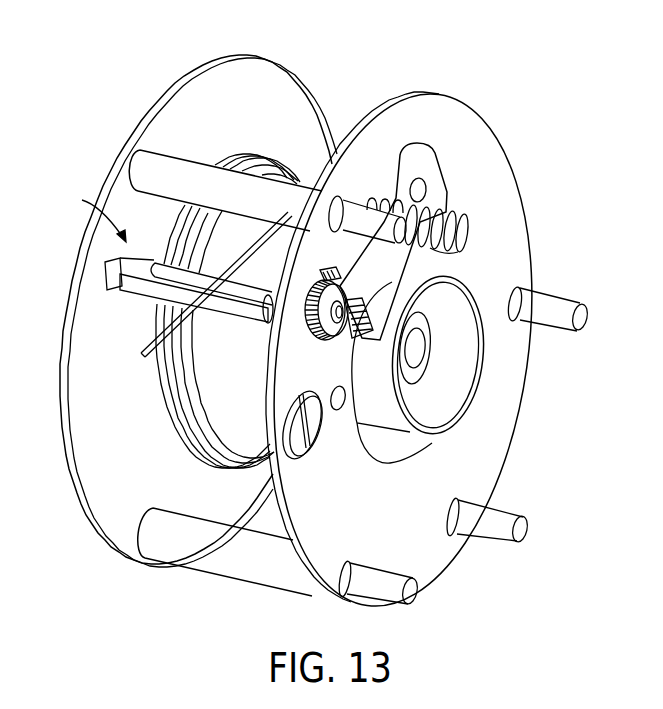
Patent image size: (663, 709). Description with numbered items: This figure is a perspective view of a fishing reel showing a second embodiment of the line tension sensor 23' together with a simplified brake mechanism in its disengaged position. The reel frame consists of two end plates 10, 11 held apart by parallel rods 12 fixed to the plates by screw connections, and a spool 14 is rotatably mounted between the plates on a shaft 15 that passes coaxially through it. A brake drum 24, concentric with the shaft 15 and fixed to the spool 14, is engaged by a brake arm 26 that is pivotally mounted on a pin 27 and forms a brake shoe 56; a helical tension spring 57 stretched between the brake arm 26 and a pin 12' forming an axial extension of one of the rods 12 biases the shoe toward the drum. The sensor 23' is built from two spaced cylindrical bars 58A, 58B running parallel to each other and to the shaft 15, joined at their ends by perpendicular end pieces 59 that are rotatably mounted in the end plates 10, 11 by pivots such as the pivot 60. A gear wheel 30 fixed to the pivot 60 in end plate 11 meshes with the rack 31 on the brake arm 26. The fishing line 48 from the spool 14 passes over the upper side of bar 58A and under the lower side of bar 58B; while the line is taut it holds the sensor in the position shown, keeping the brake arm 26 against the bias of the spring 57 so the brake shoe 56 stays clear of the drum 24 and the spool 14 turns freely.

The end plate 10 is at (263, 72).
The end plate 11 is at (490, 137).
The parallel rods 12 is at (222, 344).
The pin 12' is at (366, 176).
The spool 14 is at (200, 427).
The shaft 15 is at (418, 348).
The line tension sensor 23' is at (94, 208).
The brake drum 24 is at (445, 395).
The brake arm 26 is at (415, 157).
The pin 27 is at (420, 187).
The gear wheel 30 is at (315, 338).
The rack 31 is at (330, 275).
The fishing line 48 is at (141, 357).
The brake shoe 56 is at (450, 248).
The helical tension spring 57 is at (448, 218).
The cylindrical bar 58A is at (175, 270).
The cylindrical bar 58B is at (143, 290).
The end pieces 59 is at (108, 276).
The pivot 60 is at (355, 343).